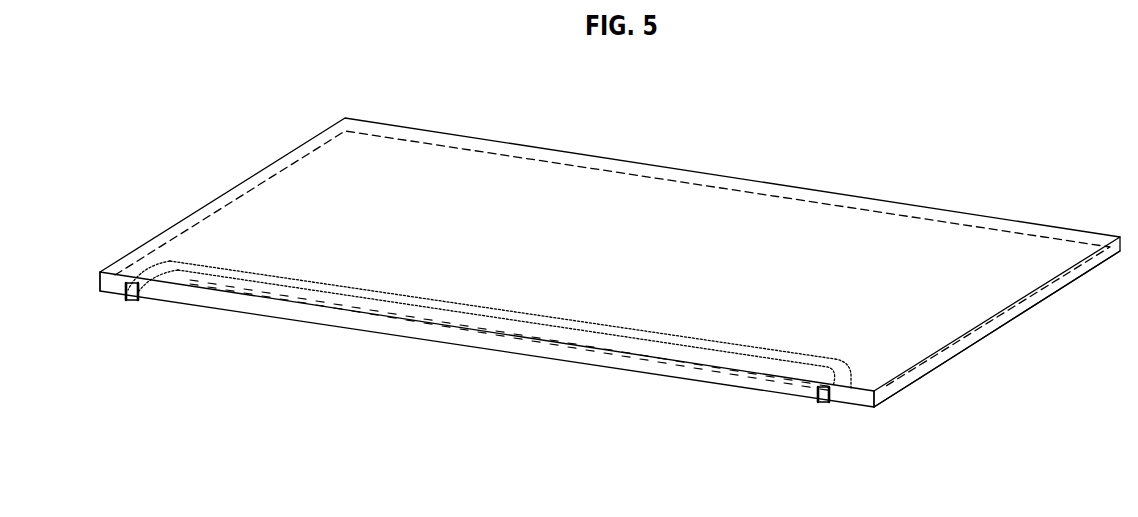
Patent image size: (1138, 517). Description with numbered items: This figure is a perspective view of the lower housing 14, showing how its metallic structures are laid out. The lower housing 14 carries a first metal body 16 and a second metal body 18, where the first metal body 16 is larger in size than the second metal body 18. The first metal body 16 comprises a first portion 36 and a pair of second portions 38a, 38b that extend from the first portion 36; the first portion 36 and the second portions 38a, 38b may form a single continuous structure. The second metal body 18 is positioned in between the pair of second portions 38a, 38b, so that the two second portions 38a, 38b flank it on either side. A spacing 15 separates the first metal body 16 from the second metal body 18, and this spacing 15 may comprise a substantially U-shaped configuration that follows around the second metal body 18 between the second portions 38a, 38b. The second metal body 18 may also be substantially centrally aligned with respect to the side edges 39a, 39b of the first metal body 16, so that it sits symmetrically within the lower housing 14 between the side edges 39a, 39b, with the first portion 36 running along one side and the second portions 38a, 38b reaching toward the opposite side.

The lower housing 14 is at (116, 156).
The spacing 15 is at (828, 403).
The first metal body 16 is at (967, 362).
The second metal body 18 is at (554, 358).
The first portion 36 is at (1047, 272).
The second portion 38a is at (118, 292).
The second portion 38b is at (850, 398).
The side edge 39a is at (118, 259).
The side edge 39b is at (915, 375).